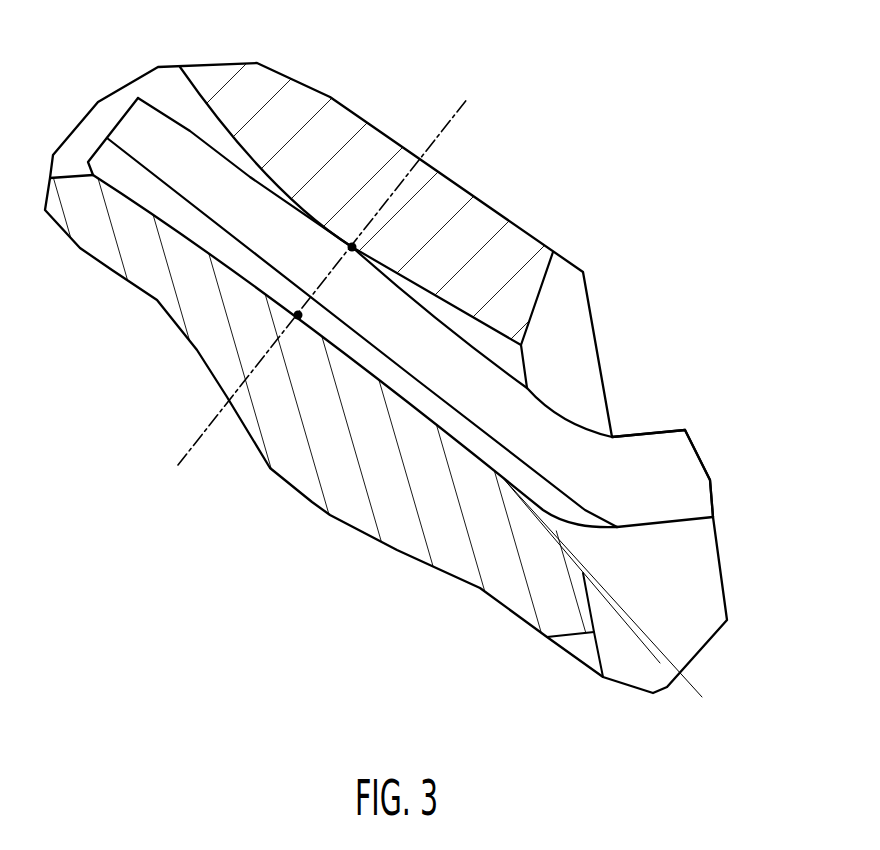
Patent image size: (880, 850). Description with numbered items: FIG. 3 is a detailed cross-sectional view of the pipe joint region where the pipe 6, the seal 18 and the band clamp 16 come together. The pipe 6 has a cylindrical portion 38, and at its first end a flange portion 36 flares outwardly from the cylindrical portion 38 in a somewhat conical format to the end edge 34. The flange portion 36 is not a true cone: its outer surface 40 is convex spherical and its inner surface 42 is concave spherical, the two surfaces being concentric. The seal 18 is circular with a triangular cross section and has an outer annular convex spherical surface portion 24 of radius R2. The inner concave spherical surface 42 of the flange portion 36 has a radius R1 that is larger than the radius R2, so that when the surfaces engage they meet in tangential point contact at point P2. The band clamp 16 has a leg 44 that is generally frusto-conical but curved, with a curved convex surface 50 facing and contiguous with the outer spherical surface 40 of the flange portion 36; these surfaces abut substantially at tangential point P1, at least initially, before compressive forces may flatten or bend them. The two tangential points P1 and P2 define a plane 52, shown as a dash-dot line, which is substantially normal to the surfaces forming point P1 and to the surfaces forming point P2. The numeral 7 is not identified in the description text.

The pipe 6 is at (701, 440).
The blade root edge 7 is at (658, 430).
The band clamp 16 is at (413, 103).
The seal 18 is at (310, 490).
The outer annular convex spherical surface portion 24 is at (613, 593).
The end edge 34 is at (123, 128).
The flange portion 36 is at (480, 387).
The cylindrical portion 38 is at (690, 483).
The outer surface 40 is at (555, 412).
The inner surface 42 is at (410, 407).
The leg 44 is at (522, 227).
The curved convex surface 50 is at (447, 307).
The plane 52 is at (468, 110).
The tangential point P1 is at (352, 247).
The tangential point contact P2 is at (298, 315).
The radius of inner concave spherical surface R1 is at (634, 636).
The radius of seal outer convex surface R2 is at (641, 656).